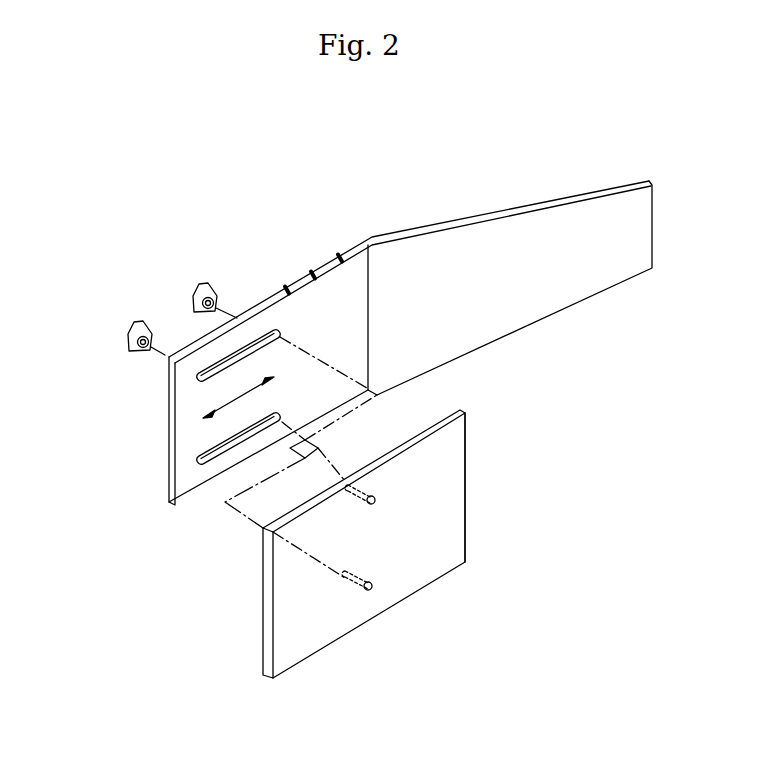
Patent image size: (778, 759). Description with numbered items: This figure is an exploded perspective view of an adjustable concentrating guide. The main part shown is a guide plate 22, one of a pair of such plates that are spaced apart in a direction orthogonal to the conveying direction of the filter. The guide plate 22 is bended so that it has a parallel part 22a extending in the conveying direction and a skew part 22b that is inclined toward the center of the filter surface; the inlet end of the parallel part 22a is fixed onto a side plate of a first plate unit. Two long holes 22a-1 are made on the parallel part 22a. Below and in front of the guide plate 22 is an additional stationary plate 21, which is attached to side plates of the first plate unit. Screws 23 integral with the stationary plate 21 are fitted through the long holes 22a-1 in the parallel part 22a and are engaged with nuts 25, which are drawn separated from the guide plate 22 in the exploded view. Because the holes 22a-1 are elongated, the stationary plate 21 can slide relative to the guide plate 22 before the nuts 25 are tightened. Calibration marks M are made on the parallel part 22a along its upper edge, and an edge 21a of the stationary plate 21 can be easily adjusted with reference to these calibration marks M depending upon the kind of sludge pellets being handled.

The guide plate 22 is at (352, 334).
The parallel part 22a is at (258, 303).
The skew part 22b is at (455, 221).
The long hole 22a-1 is at (199, 387).
The calibration marks M is at (282, 288).
The nut 25 is at (197, 297).
The stationary plate 21 is at (399, 548).
The edge 21a is at (466, 427).
The screw 23 is at (374, 504).